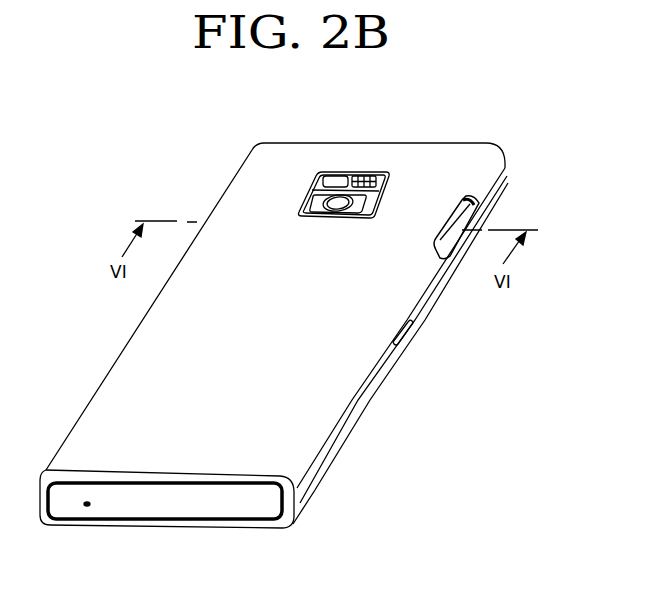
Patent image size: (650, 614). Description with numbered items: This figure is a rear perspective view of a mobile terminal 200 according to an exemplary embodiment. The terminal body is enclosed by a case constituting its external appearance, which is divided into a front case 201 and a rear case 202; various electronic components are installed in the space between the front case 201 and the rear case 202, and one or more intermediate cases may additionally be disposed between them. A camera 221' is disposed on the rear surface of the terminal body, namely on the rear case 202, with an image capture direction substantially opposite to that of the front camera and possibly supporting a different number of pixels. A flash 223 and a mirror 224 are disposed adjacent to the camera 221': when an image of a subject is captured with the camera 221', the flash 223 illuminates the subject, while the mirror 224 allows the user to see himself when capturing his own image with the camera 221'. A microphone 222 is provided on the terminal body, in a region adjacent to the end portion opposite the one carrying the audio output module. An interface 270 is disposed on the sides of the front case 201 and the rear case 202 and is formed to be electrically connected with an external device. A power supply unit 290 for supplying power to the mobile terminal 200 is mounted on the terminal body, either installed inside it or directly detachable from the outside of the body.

The mobile terminal 200 is at (200, 166).
The front case 201 is at (298, 498).
The rear case 202 is at (298, 472).
The camera 221' is at (334, 145).
The microphone 222 is at (86, 508).
The flash 223 is at (367, 176).
The mirror 224 is at (338, 178).
The interface 270 is at (462, 219).
The power supply unit 290 is at (321, 360).